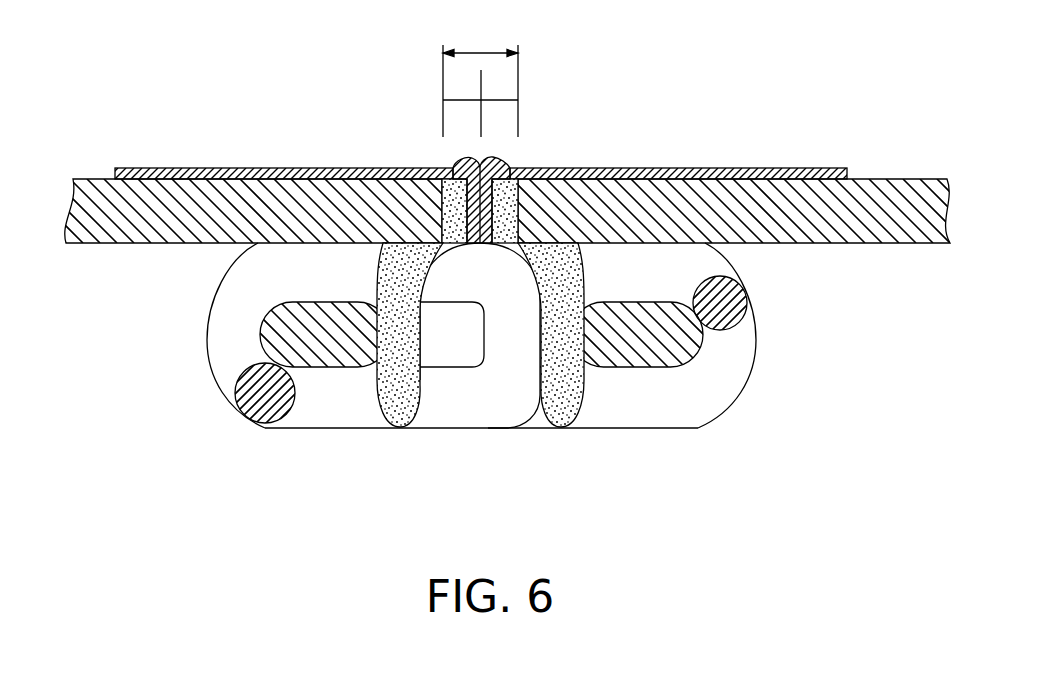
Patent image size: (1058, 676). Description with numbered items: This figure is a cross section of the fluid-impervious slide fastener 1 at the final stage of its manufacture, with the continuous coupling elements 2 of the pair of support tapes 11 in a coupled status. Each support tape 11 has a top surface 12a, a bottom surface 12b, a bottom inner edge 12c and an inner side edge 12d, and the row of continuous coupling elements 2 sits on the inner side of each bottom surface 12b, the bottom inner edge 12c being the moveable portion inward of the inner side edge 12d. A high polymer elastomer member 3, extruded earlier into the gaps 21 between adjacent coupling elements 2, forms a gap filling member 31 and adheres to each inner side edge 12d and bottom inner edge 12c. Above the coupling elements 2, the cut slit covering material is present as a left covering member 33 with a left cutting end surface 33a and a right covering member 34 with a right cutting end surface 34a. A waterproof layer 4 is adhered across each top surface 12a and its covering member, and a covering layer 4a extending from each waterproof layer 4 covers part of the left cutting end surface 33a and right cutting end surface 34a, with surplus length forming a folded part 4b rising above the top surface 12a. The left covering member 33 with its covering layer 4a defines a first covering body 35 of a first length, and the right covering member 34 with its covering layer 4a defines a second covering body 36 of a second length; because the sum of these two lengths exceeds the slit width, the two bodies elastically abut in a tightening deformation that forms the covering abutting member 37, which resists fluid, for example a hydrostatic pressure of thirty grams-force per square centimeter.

The slide fastener 1 is at (162, 133).
The continuous coupling elements 2 is at (244, 380).
The gaps 21 is at (456, 393).
The high polymer elastomer member 3 is at (470, 270).
The gap filling member 31 is at (392, 400).
The left covering member 33 is at (443, 208).
The left cutting end surface 33a is at (442, 200).
The right covering member 34 is at (498, 198).
The right cutting end surface 34a is at (519, 199).
The first covering body 35 is at (454, 211).
The second covering body 36 is at (505, 211).
The covering abutting member 37 is at (480, 74).
The waterproof layer 4 is at (233, 168).
The covering layer 4a is at (455, 173).
The folded part 4b is at (493, 157).
The support tapes 11 is at (112, 218).
The top surface 12a is at (100, 179).
The bottom surface 12b is at (157, 243).
The bottom inner edge 12c is at (423, 243).
The inner side edge 12d is at (442, 212).